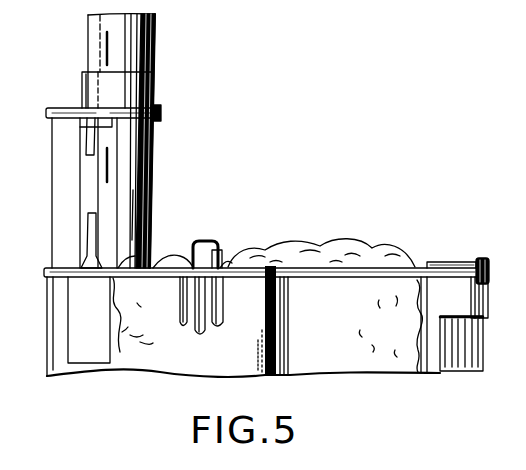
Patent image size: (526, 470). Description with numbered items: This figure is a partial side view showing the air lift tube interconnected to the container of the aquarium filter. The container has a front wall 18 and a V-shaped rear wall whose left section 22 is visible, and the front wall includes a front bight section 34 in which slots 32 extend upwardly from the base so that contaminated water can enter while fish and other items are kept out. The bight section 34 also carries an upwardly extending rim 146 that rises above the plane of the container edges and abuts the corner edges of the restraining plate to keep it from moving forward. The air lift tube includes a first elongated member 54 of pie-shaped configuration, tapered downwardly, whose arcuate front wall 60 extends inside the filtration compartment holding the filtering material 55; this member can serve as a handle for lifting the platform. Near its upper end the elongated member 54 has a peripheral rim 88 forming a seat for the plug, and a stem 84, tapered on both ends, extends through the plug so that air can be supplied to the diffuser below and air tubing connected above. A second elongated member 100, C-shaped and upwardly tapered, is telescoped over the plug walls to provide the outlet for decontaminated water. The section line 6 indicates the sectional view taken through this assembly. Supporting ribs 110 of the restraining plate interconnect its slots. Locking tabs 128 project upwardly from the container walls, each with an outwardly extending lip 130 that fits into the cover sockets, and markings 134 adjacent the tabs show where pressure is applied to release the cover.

The section line 6- 6 is at (96, 50).
The front wall 18 is at (350, 360).
The left section 22 is at (152, 343).
The slots 32 is at (468, 344).
The front bight section 34 is at (486, 297).
The first elongated member 54 is at (163, 172).
The filtering material 55 is at (327, 250).
The arcuate front wall 60 is at (150, 216).
The stem 84 is at (82, 82).
The peripheral rim 88 is at (162, 118).
The second elongated member 100 is at (163, 62).
The supporting ribs 110 is at (158, 31).
The locking tabs 128 is at (223, 254).
The lip 130 is at (231, 227).
The markings 134 is at (187, 328).
The rim 146 is at (473, 261).